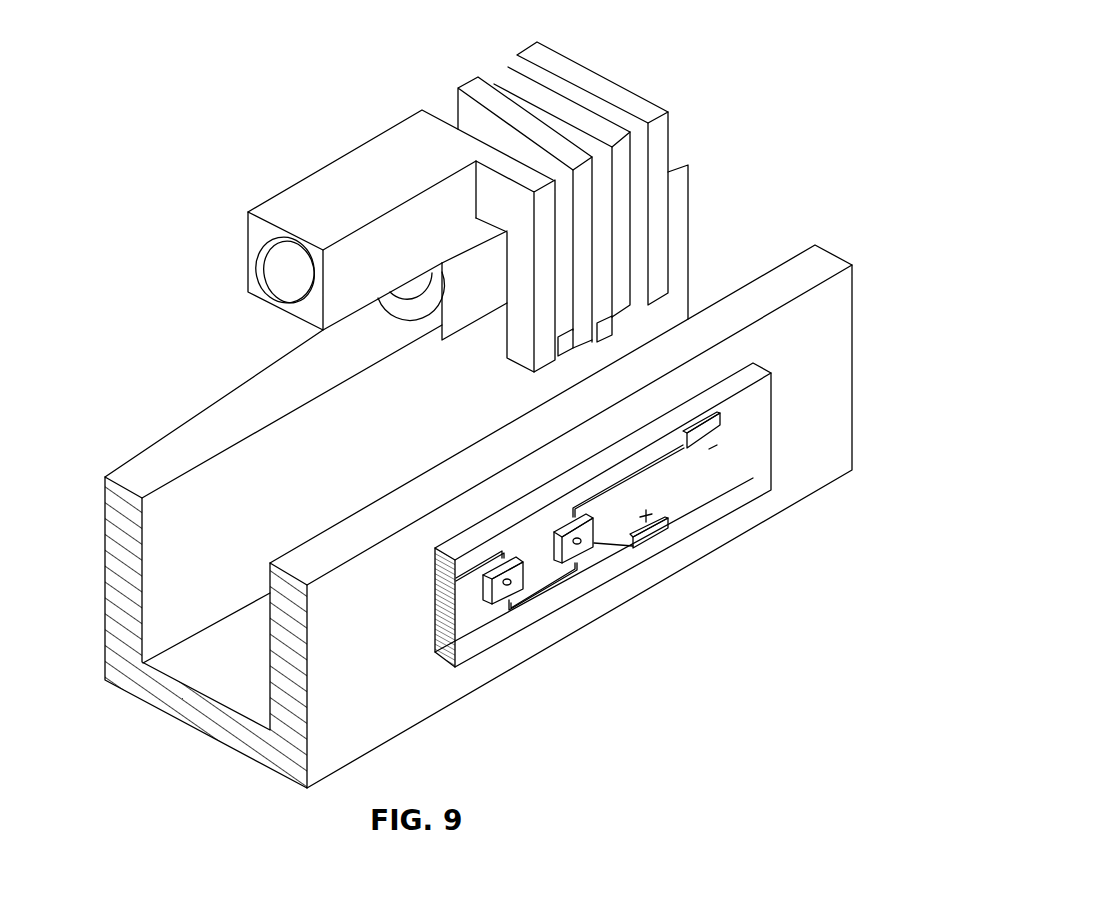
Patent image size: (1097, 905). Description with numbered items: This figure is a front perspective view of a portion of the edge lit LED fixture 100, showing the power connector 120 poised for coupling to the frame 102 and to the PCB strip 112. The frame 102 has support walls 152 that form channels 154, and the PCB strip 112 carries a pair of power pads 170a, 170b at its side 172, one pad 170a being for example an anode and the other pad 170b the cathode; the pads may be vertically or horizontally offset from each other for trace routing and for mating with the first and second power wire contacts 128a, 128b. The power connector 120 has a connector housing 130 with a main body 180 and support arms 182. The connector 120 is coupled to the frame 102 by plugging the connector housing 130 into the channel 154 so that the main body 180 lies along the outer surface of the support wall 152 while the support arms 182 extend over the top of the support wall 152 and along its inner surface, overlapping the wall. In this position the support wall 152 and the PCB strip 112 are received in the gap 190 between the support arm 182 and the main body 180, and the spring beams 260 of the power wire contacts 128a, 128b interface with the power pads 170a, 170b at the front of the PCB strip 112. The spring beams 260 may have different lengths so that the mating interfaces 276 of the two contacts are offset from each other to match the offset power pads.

The edge lit LED fixture 100 is at (148, 240).
The frame 102 is at (253, 402).
The PCB strip 112 is at (728, 485).
The power connector 120 is at (590, 200).
The first power wire contact 128a is at (460, 122).
The second power wire contact 128b is at (523, 92).
The connector housing 130 is at (318, 178).
The support wall 152 is at (158, 460).
The channel 154 is at (263, 460).
The power pad 170a is at (662, 532).
The power pad 170b is at (720, 430).
The side 172 is at (852, 306).
The main body 180 is at (388, 140).
The support arm 182 is at (660, 127).
The gap 190 is at (495, 258).
The spring beam 260 is at (622, 189).
The mating interface 276 is at (557, 337).